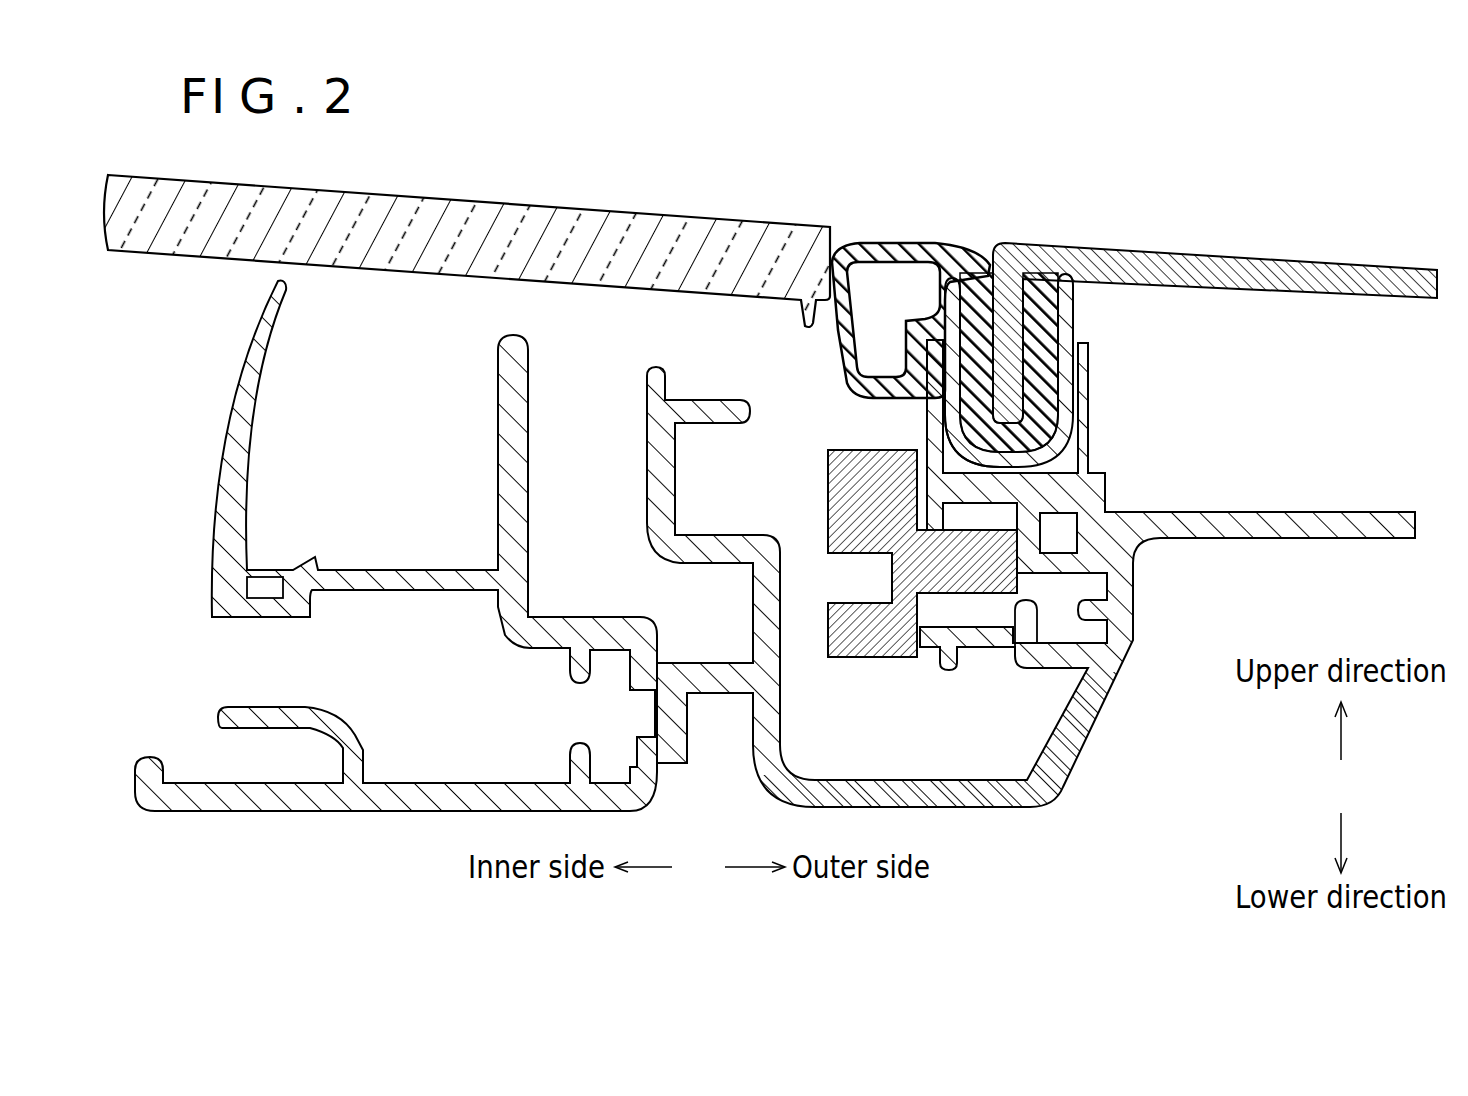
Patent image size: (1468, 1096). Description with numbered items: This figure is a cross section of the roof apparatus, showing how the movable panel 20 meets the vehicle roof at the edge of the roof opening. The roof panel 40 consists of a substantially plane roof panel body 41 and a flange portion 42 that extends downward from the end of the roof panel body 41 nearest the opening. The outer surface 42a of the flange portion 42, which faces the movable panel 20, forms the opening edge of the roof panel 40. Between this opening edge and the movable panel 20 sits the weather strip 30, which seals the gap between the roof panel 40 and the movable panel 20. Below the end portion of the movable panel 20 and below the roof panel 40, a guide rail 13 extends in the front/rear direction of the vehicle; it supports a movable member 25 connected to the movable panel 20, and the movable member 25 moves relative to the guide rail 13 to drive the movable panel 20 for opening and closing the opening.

The guide rail 13 is at (950, 808).
The movable panel 20 is at (703, 222).
The movable member 25 is at (868, 658).
The weather strip 30 is at (979, 211).
The roof panel 40 is at (1142, 319).
The roof panel body 41 is at (1090, 245).
The flange portion 42 is at (1005, 370).
The outer surface 42a is at (947, 392).